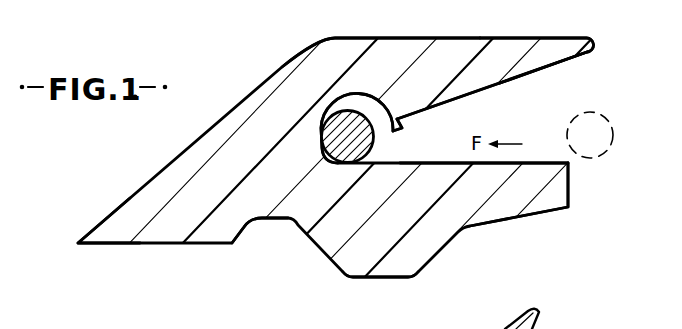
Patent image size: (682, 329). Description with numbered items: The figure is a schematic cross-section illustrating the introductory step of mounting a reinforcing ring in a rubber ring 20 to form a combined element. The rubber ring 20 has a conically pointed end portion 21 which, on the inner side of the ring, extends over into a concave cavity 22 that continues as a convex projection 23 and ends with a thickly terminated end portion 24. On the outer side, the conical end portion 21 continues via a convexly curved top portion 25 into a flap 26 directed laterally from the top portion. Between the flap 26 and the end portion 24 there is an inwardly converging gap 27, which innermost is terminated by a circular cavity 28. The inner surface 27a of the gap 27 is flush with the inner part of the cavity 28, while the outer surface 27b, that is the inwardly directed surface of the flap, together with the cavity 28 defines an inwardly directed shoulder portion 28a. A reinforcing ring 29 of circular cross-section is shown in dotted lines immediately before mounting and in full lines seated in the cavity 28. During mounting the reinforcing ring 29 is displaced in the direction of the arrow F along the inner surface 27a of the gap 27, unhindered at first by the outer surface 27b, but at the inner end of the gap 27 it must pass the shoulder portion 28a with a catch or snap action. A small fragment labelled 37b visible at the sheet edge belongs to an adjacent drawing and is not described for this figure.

The rubber ring 20 is at (292, 112).
The conically pointed end portion 21 is at (112, 233).
The concave cavity 22 is at (248, 223).
The convex projection 23 is at (392, 278).
The thickly terminated end portion 24 is at (558, 192).
The convexly curved top portion 25 is at (314, 44).
The flap 26 is at (518, 53).
The inwardly converging gap 27 is at (538, 98).
The inner surface of the gap 27a is at (503, 162).
The outer surface of the gap 27b is at (457, 102).
The circular cavity 28 is at (372, 110).
The shoulder portion 28a is at (400, 127).
The reinforcing ring 29 is at (362, 136).
The fragment (other figure) 37b is at (549, 319).